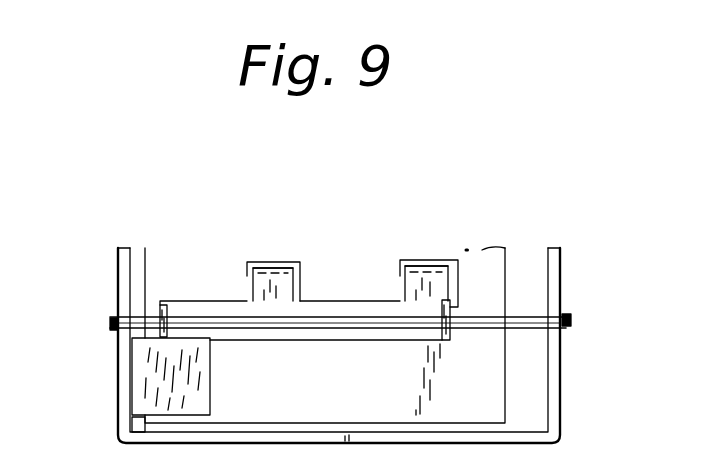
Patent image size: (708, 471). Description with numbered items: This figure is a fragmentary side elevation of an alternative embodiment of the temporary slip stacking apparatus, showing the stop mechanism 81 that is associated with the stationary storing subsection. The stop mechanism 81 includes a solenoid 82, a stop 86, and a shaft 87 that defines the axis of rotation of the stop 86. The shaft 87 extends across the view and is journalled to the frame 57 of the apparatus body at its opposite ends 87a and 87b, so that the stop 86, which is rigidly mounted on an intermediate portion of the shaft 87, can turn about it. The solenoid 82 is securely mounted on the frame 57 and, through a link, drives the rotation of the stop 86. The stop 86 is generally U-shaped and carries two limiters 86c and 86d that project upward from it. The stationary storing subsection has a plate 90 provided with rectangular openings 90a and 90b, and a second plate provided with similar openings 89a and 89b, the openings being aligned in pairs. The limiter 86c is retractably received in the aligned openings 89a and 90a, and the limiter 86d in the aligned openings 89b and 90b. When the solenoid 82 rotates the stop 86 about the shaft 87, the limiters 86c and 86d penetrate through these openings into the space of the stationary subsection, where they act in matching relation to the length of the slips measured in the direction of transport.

The frame 57 is at (117, 264).
The plate 90 is at (178, 247).
The stop mechanism 81 is at (216, 286).
The solenoid 82 is at (210, 380).
The stop 86 is at (357, 300).
The limiter 86c is at (275, 262).
The limiter 86d is at (433, 260).
The opening 90a is at (252, 236).
The opening 89a is at (247, 262).
The opening 90b is at (415, 247).
The opening 89b is at (402, 262).
The shaft 87 is at (338, 352).
The end of shaft 87a is at (111, 334).
The end of shaft 87b is at (569, 327).